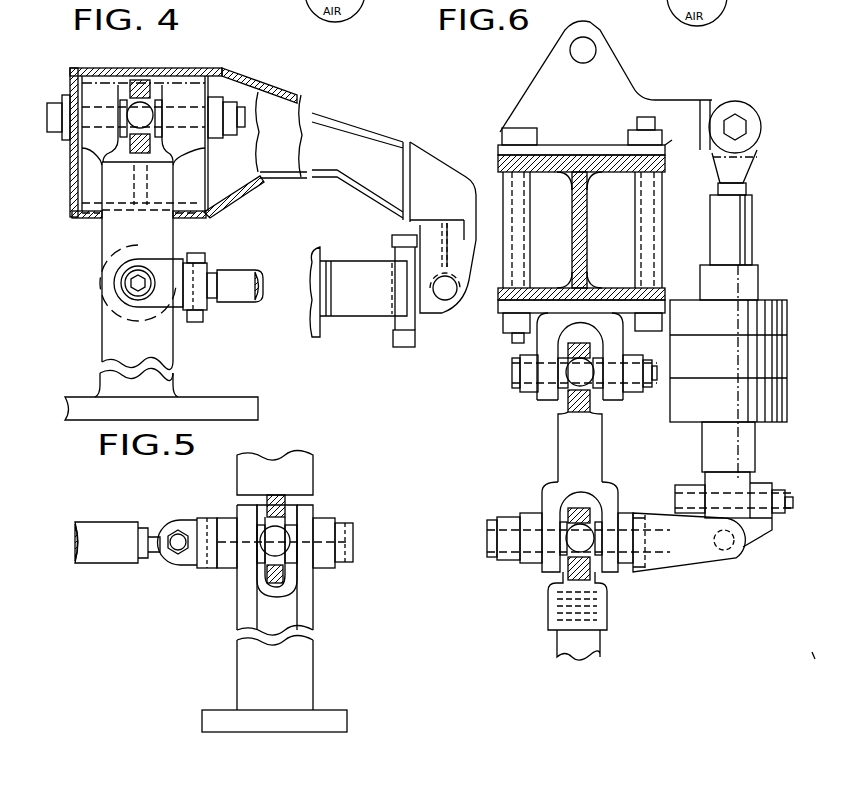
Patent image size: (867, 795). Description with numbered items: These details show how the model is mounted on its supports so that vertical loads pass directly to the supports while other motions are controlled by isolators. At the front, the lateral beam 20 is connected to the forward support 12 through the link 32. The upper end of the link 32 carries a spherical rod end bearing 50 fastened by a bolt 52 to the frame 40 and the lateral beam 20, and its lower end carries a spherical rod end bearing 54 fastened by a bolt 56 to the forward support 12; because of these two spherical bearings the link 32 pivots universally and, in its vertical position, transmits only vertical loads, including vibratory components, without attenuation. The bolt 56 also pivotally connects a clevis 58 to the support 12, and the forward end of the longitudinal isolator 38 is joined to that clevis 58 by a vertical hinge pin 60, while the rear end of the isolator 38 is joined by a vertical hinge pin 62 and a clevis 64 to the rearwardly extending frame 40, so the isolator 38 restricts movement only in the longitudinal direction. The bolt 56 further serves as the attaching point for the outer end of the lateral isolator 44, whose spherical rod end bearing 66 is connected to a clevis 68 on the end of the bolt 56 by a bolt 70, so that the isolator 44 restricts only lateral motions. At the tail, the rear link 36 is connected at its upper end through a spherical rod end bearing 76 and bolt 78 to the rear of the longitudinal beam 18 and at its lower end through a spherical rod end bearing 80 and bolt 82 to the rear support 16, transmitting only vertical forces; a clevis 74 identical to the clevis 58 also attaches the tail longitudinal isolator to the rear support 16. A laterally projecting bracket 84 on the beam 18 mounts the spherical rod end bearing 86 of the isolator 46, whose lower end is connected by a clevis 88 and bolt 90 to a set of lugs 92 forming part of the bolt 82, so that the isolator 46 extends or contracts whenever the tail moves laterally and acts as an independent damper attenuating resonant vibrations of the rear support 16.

In FIG. 4, the forward support 12 is at (98, 365).
In FIG. 5, the forward support 12 is at (305, 657).
In FIG. 6, the rear support 16 is at (566, 640).
In FIG. 6, the longitudinal beam 18 is at (582, 223).
In FIG. 4, the lateral beam 20 is at (140, 182).
In FIG. 4, the link 32 is at (104, 238).
In FIG. 5, the link 32 is at (305, 473).
In FIG. 6, the rear link 36 is at (567, 450).
In FIG. 4, the longitudinal isolator 38 is at (245, 277).
In FIG. 4, the frame 40 is at (314, 104).
In FIG. 5, the lateral isolator 44 is at (110, 556).
In FIG. 6, the isolator 46 is at (759, 273).
In FIG. 4, the spherical rod end bearing 50 is at (141, 88).
In FIG. 4, the bolt 52 is at (243, 103).
In FIG. 4, the spherical rod end bearing 54 is at (119, 283).
In FIG. 5, the spherical rod end bearing 54 is at (271, 586).
In FIG. 5, the bolt 56 is at (343, 525).
In FIG. 4, the clevis 58 is at (162, 266).
In FIG. 5, the clevis 58 is at (225, 566).
In FIG. 4, the vertical hinge pin 60 is at (192, 323).
In FIG. 4, the vertical hinge pin 62 is at (403, 347).
In FIG. 4, the clevis 64 is at (437, 313).
In FIG. 5, the spherical rod end bearing 66 is at (172, 522).
In FIG. 5, the clevis 68 is at (195, 523).
In FIG. 5, the bolt 70 is at (176, 552).
In FIG. 6, the clevis 74 is at (528, 563).
In FIG. 6, the spherical rod end bearing 76 is at (547, 401).
In FIG. 6, the bolt 78 is at (512, 376).
In FIG. 6, the spherical rod end bearing 80 is at (562, 522).
In FIG. 6, the bolt 82 is at (487, 541).
In FIG. 6, the laterally projecting bracket 84 is at (660, 110).
In FIG. 6, the spherical rod end bearing 86 is at (752, 168).
In FIG. 6, the clevis 88 is at (757, 533).
In FIG. 6, the bolt 90 is at (676, 497).
In FIG. 6, the lugs 92 is at (692, 562).